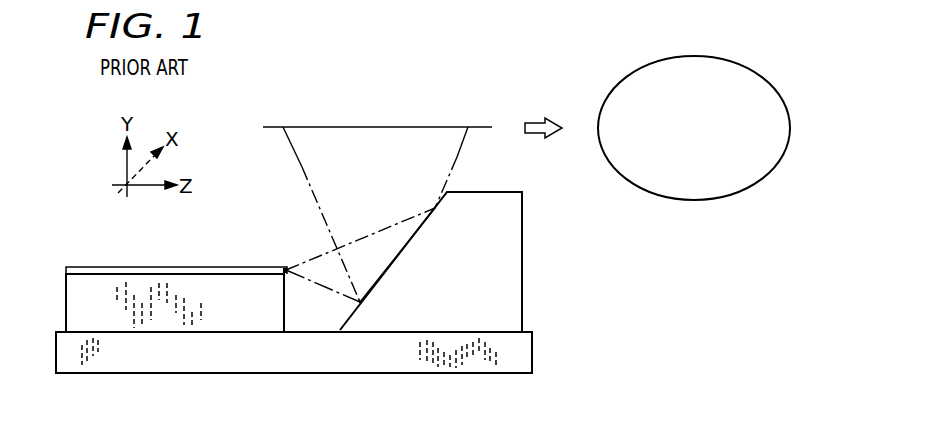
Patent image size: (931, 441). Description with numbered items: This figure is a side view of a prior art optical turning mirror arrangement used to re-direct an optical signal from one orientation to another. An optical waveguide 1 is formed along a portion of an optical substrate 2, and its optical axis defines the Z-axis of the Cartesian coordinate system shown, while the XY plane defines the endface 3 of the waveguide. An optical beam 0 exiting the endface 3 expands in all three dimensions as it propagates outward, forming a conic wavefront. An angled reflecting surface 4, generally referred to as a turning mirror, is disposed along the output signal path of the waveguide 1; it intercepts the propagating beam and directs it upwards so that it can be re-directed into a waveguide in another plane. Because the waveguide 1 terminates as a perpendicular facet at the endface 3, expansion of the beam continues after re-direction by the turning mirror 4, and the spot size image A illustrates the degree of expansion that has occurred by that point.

The optical waveguide 1 is at (102, 273).
The optical substrate 2 is at (77, 304).
The endface 3 is at (288, 266).
The reflecting surface 4 is at (397, 262).
The optical beam 0 is at (333, 297).
The spot size image A is at (767, 87).